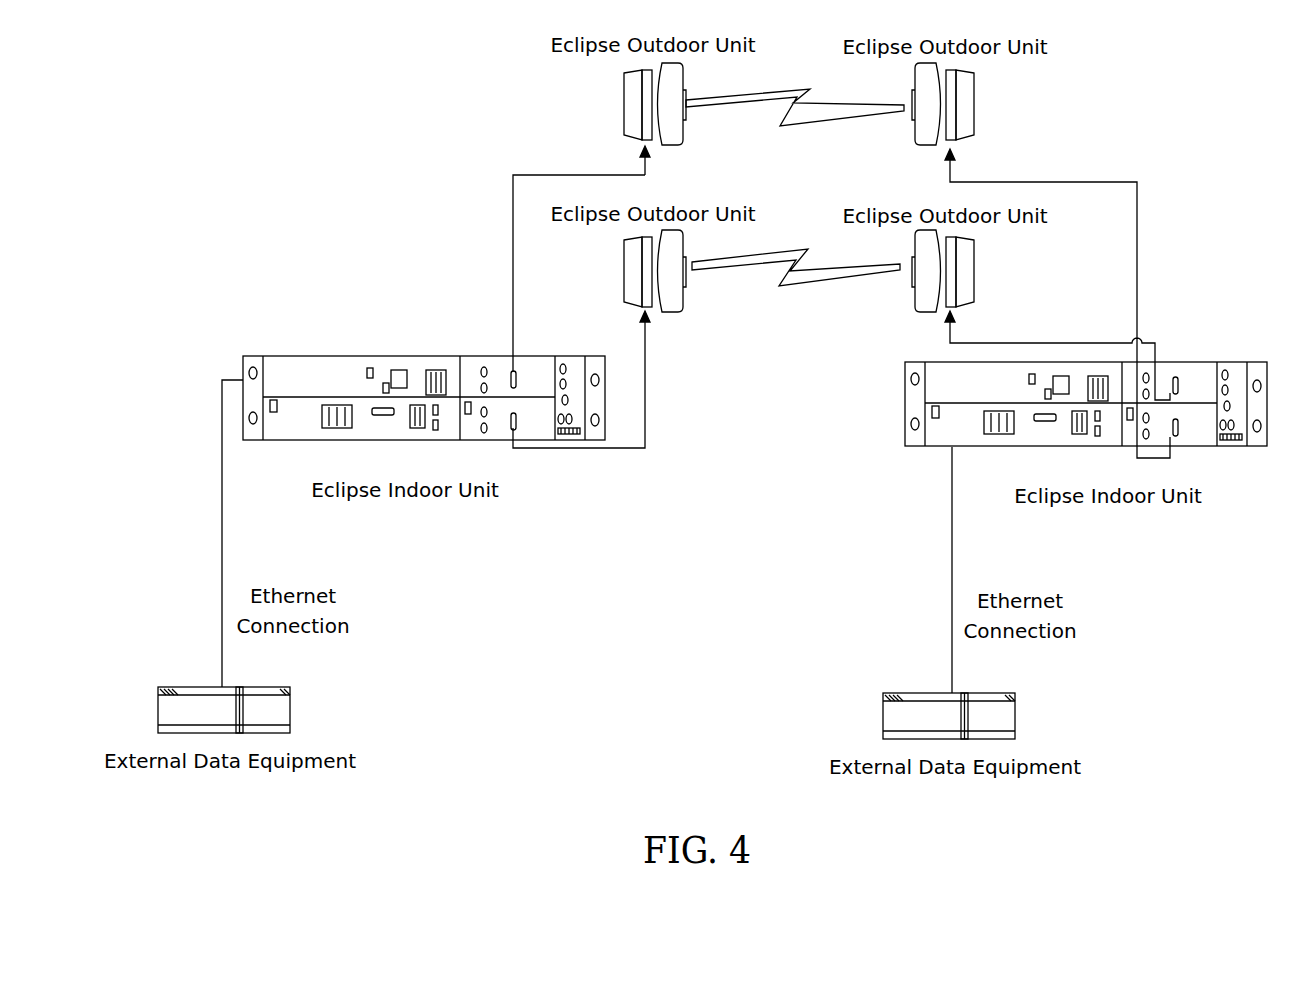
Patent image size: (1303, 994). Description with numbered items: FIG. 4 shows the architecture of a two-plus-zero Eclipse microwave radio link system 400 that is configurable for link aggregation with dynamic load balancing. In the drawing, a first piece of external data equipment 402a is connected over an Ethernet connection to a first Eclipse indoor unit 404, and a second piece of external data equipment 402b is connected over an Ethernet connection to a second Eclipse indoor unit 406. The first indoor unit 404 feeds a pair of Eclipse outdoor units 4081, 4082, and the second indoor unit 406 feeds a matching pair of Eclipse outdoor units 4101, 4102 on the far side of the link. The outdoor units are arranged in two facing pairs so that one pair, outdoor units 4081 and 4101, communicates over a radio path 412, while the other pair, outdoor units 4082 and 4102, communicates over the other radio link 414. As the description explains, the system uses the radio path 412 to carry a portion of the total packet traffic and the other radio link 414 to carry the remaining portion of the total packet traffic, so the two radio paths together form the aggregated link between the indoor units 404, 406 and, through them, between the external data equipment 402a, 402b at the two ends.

The wireless communication system 400 is at (254, 147).
The external data equipment 402a is at (178, 687).
The external data equipment 402b is at (1000, 693).
The indoor unit 404 is at (311, 342).
The indoor unit 406 is at (1197, 346).
The outdoor unit 4081 is at (621, 108).
The outdoor unit 4082 is at (668, 312).
The outdoor unit 4101 is at (977, 110).
The outdoor unit 4102 is at (925, 312).
The radio path 412 is at (762, 122).
The radio link 414 is at (762, 278).